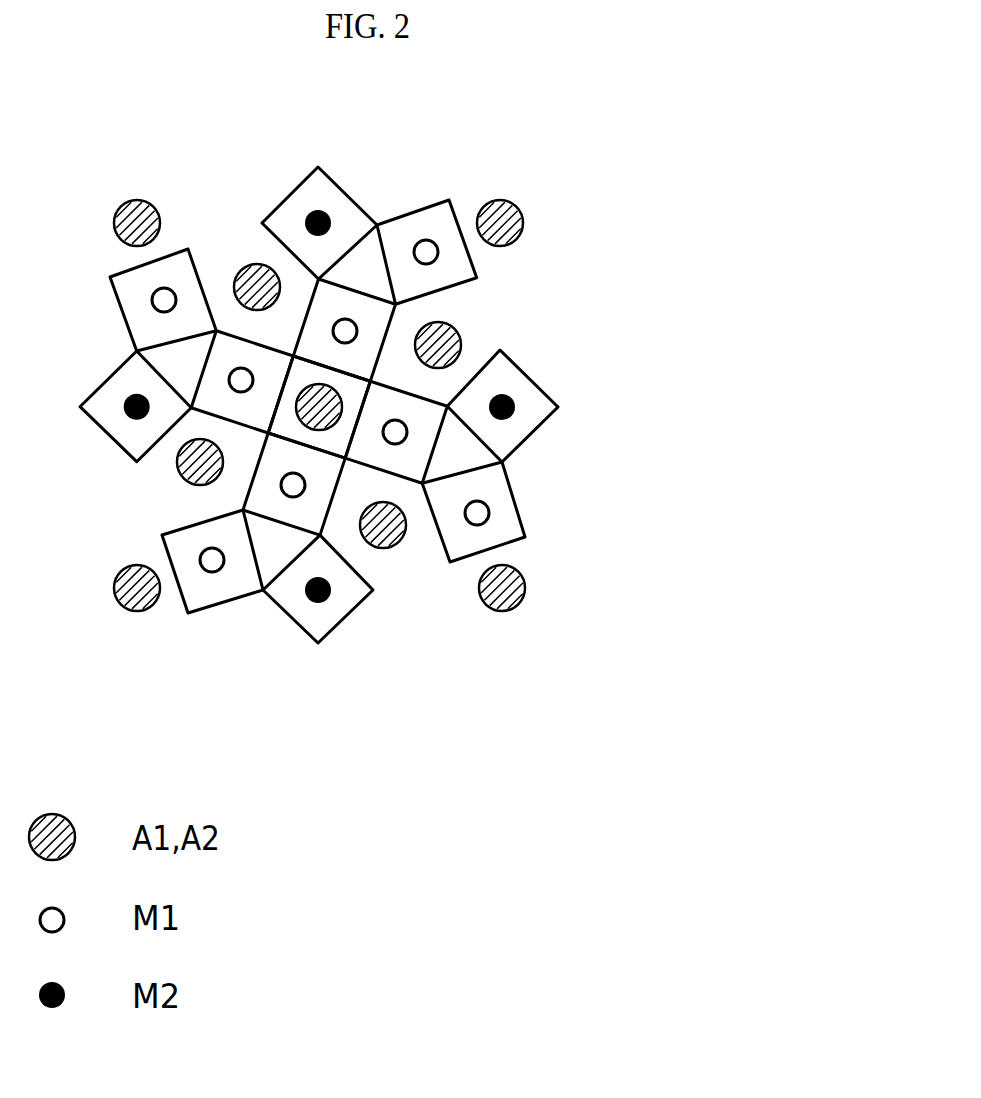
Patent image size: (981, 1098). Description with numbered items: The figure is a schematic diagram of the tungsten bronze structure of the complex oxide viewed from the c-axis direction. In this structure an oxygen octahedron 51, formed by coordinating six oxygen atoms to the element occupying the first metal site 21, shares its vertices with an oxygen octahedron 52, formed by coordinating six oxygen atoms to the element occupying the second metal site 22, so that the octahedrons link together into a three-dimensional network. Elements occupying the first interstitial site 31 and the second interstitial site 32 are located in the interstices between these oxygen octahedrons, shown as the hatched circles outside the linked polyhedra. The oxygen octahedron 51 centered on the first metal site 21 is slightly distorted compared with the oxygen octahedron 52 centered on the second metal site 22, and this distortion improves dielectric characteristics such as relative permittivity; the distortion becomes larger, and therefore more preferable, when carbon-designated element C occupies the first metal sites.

The M1 site 21 is at (489, 510).
The M2 site 22 is at (527, 373).
The A1 site 31 is at (524, 598).
The A2 site 32 is at (395, 545).
The oxygen octahedron 51 is at (508, 477).
The oxygen octahedron 52 is at (505, 399).